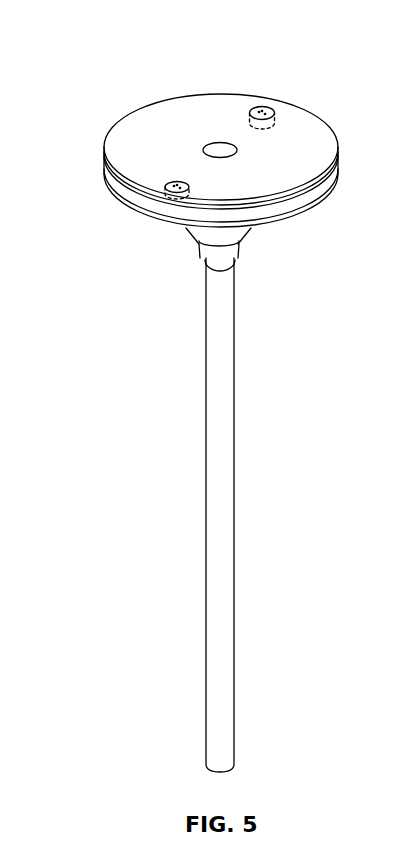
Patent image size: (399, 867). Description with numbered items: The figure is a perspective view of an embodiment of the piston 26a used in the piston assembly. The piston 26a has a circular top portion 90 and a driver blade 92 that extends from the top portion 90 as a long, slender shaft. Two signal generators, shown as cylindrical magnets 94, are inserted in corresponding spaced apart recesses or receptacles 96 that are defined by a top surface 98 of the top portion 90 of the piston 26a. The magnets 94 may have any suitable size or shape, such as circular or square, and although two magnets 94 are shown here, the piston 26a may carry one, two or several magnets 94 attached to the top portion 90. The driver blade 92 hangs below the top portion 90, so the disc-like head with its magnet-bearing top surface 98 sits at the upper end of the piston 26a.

The piston 26a is at (98, 193).
The circular top portion 90 is at (233, 412).
The driver blade 92 is at (213, 508).
The cylindrical magnets 94 is at (263, 110).
The recesses 96 is at (245, 118).
The top surface 98 is at (165, 117).